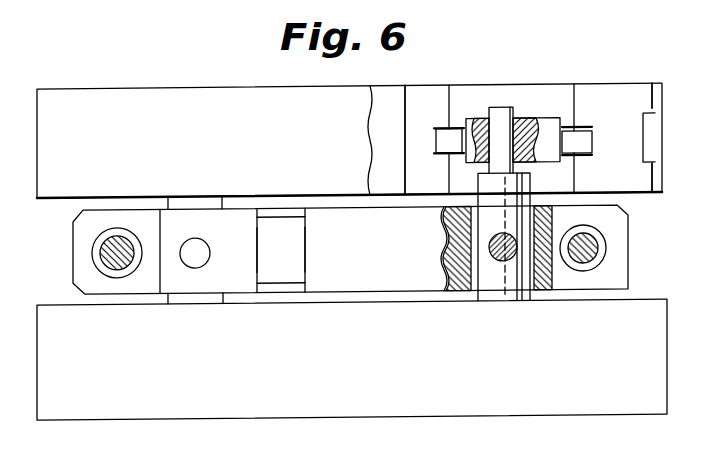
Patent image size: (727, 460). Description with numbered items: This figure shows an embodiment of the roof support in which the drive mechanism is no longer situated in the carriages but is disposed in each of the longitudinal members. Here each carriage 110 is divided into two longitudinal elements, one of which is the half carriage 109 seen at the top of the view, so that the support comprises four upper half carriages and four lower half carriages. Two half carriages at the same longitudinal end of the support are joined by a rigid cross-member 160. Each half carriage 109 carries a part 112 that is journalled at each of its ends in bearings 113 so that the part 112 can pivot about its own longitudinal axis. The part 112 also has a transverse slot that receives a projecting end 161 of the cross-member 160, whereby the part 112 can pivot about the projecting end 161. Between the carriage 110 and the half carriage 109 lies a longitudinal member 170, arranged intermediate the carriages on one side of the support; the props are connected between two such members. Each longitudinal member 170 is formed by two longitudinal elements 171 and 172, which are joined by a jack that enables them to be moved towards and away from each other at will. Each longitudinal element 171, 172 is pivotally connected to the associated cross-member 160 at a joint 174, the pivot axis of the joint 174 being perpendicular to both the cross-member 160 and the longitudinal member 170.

The longitudinal element 109 is at (627, 111).
The carriage 110 is at (437, 391).
The part 112 is at (527, 123).
The bearings 113 is at (440, 131).
The cross-member 160 is at (517, 220).
The projecting end 161 is at (498, 110).
The longitudinal member 170 is at (323, 265).
The longitudinal element 171 is at (235, 264).
The longitudinal element 172 is at (328, 270).
The joint 174 is at (509, 265).